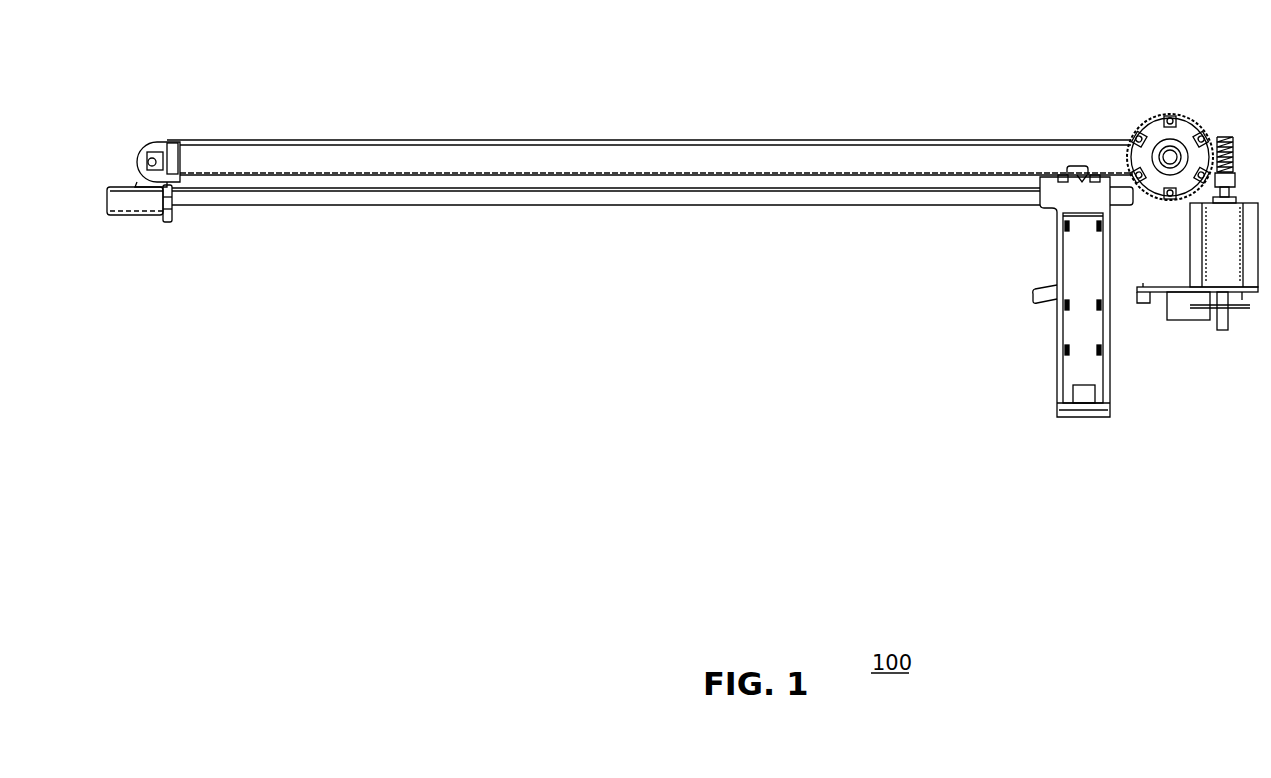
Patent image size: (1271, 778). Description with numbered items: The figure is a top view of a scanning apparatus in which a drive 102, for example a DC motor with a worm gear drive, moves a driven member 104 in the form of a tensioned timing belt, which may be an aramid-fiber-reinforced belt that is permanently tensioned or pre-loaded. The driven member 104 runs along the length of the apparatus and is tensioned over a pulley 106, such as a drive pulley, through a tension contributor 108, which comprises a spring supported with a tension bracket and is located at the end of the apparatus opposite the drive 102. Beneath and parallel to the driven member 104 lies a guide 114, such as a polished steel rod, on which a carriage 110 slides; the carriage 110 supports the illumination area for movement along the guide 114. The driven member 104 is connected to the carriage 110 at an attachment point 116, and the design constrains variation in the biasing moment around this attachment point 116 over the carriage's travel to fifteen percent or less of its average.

The drive 102 is at (1246, 360).
The driven member 104 is at (673, 124).
The pulley 106 is at (1194, 85).
The tension contributor 108 is at (172, 118).
The carriage 110 is at (1035, 232).
The guide 114 is at (707, 207).
The attachment point 116 is at (1099, 164).